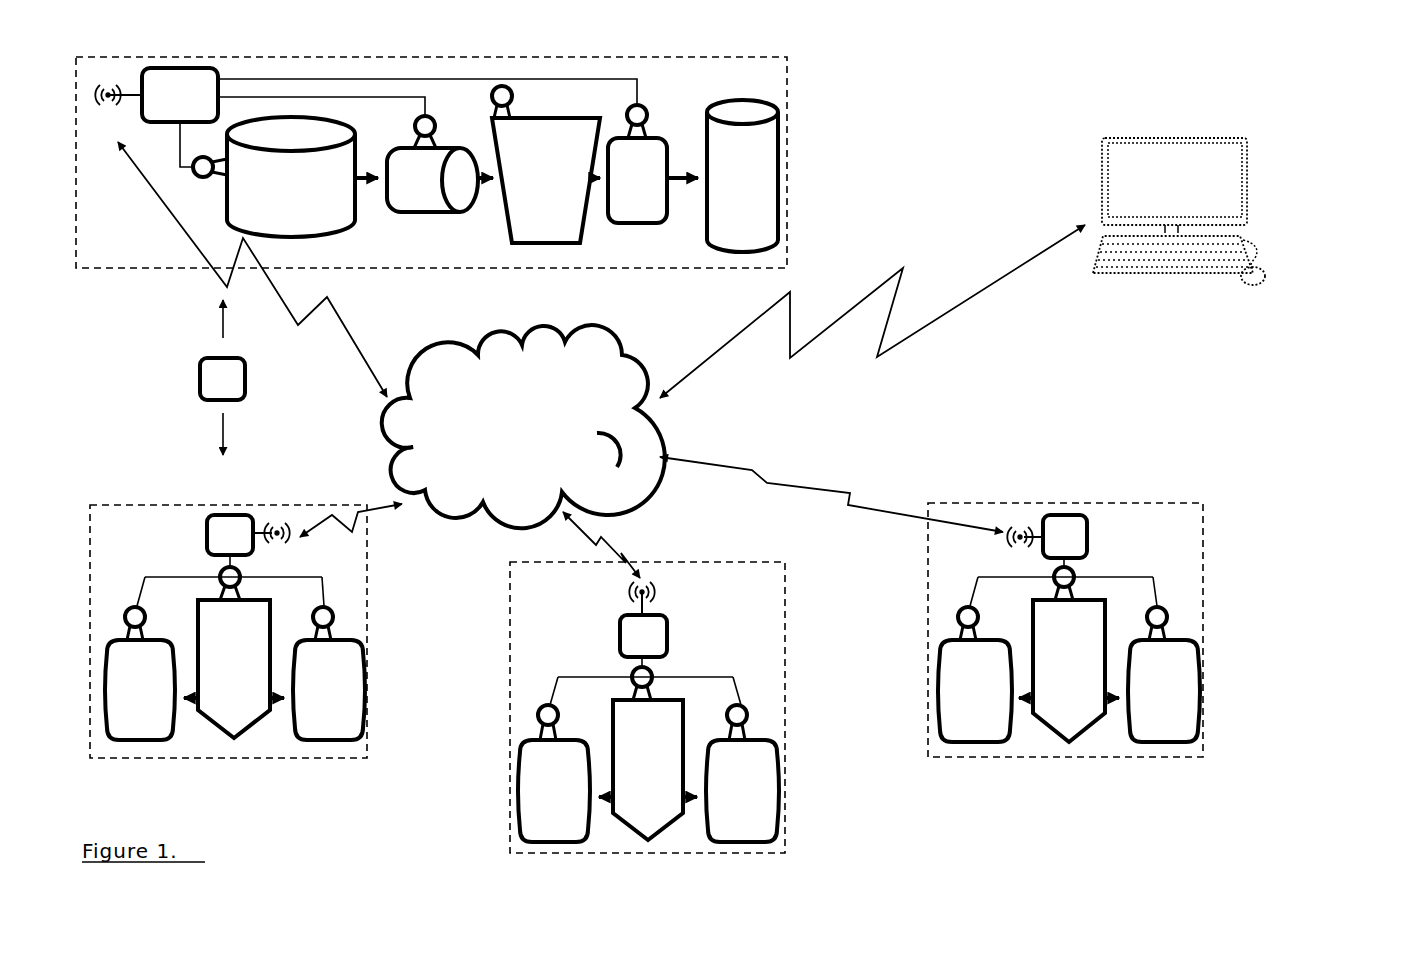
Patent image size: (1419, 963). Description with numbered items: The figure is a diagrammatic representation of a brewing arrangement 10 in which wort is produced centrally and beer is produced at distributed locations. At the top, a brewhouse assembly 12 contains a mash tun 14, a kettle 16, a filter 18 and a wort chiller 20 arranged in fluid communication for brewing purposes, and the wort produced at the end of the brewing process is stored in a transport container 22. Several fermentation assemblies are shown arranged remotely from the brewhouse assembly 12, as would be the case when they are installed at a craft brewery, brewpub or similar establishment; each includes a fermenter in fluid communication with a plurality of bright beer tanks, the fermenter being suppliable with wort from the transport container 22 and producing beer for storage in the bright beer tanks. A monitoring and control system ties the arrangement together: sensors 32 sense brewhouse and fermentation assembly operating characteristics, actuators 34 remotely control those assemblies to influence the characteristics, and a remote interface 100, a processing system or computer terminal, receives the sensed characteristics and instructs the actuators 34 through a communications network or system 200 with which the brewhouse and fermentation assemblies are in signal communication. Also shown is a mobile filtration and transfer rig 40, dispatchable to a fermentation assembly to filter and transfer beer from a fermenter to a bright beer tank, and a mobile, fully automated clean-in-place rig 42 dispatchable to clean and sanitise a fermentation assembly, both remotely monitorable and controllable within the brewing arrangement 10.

The brewing arrangement 10 is at (1337, 797).
The brewhouse assembly 12 is at (175, 267).
The mash tun 14 is at (275, 201).
The kettle 16 is at (532, 172).
The filter 18 is at (403, 189).
The wort chiller 20 is at (627, 189).
The transport container 22 is at (732, 187).
The sensor 32 is at (242, 572).
The actuator 34 is at (632, 688).
The mobile filtration and transfer rig 40 is at (266, 377).
The mobile clean-in-place rig 42 is at (240, 395).
The remote interface 100 is at (1262, 166).
The communications network 200 is at (505, 438).